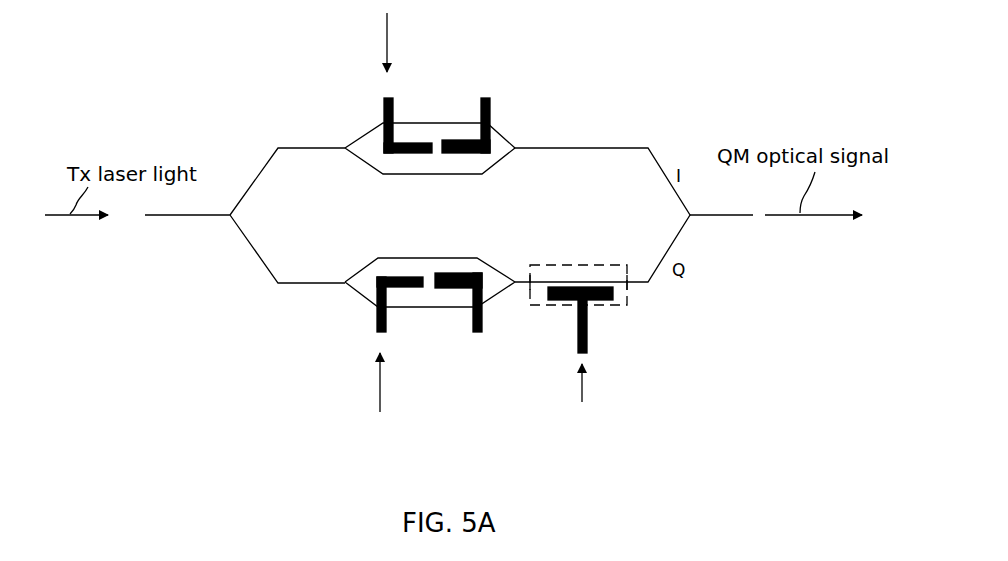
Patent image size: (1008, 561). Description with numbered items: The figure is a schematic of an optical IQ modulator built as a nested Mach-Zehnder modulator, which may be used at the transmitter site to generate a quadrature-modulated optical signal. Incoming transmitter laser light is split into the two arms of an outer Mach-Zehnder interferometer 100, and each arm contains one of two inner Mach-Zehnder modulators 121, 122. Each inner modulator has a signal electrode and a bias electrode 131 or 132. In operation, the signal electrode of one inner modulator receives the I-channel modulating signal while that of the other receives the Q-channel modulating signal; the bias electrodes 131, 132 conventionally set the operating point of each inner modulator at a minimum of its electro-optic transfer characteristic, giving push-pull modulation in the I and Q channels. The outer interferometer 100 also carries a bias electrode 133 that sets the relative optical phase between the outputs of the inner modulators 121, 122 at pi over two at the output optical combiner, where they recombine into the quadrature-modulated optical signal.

The outer Mach-Zehnder interferometer 100 is at (240, 111).
The inner Mach-Zehnder modulator 121 is at (352, 90).
The inner Mach-Zehnder modulator 122 is at (374, 251).
The bias electrode 131 is at (481, 99).
The bias electrode 132 is at (465, 285).
The bias electrode 133 is at (560, 285).